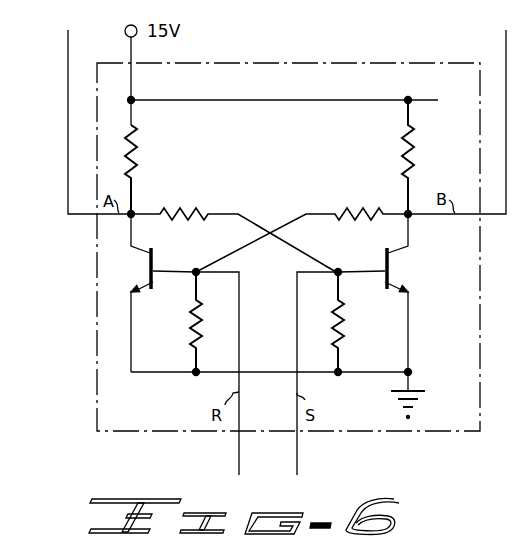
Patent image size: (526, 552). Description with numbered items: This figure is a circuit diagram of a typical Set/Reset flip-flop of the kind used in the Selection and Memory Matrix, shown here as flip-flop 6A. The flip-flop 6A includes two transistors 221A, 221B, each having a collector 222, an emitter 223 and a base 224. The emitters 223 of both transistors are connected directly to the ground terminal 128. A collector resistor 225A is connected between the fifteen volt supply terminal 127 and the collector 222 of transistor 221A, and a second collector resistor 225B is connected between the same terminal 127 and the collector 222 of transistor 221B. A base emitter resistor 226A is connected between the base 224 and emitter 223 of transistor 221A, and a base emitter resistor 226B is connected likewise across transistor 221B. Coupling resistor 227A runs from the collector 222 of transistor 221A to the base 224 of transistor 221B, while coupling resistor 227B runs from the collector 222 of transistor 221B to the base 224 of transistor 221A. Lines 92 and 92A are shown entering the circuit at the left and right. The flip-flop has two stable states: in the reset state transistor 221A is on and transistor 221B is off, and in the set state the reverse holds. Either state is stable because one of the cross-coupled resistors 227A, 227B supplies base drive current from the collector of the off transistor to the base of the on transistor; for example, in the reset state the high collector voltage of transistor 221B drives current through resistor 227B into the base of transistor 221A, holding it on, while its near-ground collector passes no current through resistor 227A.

The flip-flop 6A is at (383, 68).
The input/output line 92 is at (68, 42).
The input/output line 92A is at (506, 50).
The +15 volt supply terminal 127 is at (125, 31).
The collector resistor 225A is at (137, 151).
The collector resistor 225B is at (402, 149).
The coupling resistor 227A is at (173, 210).
The coupling resistor 227B is at (359, 211).
The collector 222 is at (138, 250).
The base 224 is at (176, 278).
The emitter 223 is at (148, 287).
The transistor 221A is at (143, 265).
The transistor 221B is at (393, 268).
The base emitter resistor 226A is at (191, 333).
The base emitter resistor 226B is at (342, 330).
The ground terminal 128 is at (412, 390).